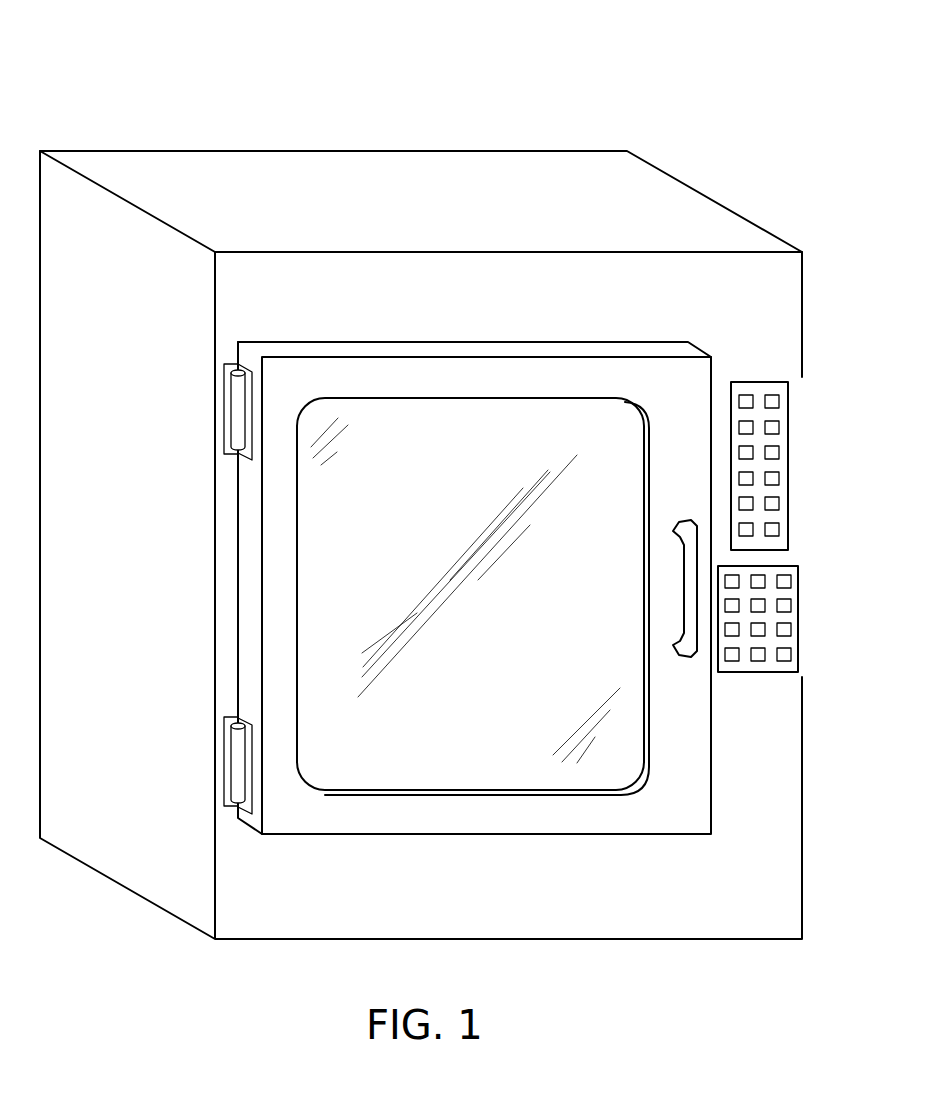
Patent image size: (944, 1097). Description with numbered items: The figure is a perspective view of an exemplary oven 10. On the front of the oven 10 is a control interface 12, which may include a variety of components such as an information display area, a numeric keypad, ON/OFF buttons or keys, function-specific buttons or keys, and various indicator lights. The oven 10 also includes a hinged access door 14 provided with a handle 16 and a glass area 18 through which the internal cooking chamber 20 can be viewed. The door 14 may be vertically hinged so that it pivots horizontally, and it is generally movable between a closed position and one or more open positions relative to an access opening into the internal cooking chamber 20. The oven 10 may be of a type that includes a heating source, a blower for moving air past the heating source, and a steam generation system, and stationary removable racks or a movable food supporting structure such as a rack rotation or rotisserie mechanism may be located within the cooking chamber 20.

The oven 10 is at (421, 477).
The control interface 12 is at (800, 381).
The hinged access door 14 is at (254, 610).
The handle 16 is at (690, 522).
The glass area 18 is at (649, 730).
The internal cooking chamber 20 is at (473, 637).